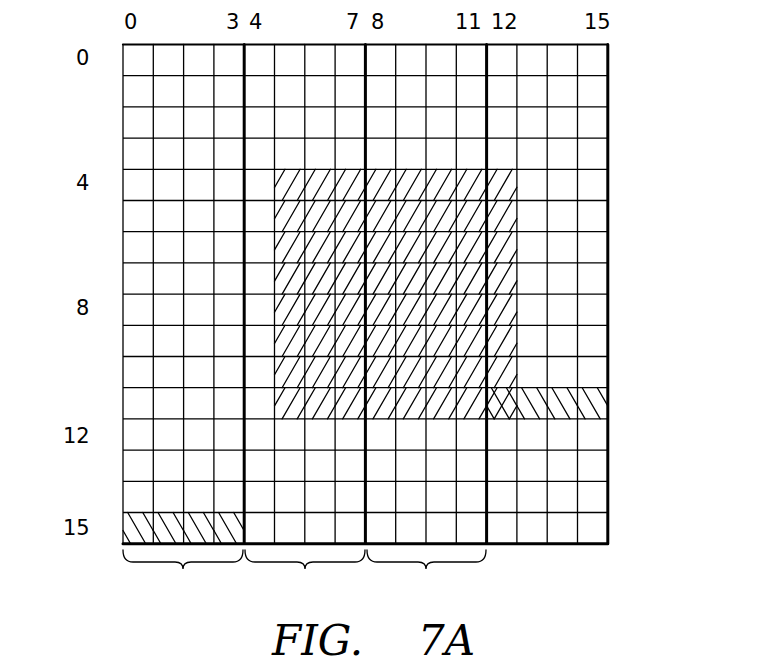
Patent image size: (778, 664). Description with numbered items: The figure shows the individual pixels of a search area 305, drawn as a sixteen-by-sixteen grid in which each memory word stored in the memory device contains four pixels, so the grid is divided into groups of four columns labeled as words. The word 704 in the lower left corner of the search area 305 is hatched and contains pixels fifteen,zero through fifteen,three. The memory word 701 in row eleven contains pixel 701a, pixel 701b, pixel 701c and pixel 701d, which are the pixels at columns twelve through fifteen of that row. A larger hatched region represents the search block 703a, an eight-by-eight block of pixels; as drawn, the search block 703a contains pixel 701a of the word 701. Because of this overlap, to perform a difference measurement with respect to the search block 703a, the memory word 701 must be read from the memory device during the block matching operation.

The search area 305 is at (592, 545).
The search block 703a is at (517, 263).
The word 704 is at (131, 527).
The memory word 701 is at (604, 389).
The pixel 701a is at (512, 393).
The pixel 701b is at (532, 392).
The pixel 701c is at (567, 397).
The pixel 701d is at (649, 418).